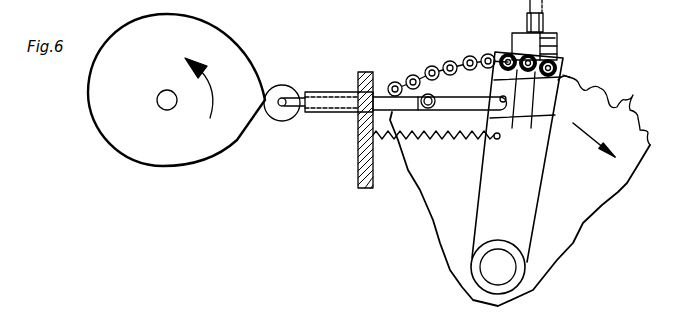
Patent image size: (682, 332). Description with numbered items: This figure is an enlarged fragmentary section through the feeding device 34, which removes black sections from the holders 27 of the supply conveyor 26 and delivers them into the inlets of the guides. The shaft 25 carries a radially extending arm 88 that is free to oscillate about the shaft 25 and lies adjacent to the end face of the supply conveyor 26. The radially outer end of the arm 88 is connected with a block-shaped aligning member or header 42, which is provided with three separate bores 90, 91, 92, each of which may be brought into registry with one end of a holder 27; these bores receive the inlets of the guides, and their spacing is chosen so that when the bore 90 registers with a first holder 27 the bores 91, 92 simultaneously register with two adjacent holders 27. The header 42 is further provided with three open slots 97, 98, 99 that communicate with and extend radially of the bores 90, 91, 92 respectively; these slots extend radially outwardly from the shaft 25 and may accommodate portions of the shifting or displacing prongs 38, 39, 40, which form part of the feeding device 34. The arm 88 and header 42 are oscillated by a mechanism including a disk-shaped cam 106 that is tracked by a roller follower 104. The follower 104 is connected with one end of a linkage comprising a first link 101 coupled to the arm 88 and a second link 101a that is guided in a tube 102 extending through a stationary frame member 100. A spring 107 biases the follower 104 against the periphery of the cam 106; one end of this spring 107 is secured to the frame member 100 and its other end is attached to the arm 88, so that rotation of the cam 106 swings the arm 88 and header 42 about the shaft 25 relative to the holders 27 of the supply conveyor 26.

The disk-shaped cam 106 is at (228, 50).
The roller follower 104 is at (266, 88).
The second link 101a is at (318, 92).
The tube 102 is at (345, 113).
The stationary frame member 100 is at (373, 82).
The first link 101 is at (442, 93).
The spring 107 is at (455, 140).
The open slot 97 is at (505, 50).
The shifting prong 38 is at (507, 43).
The open slot 98 is at (523, 30).
The feeding device 34 is at (553, 30).
The shifting prong 39 is at (557, 41).
The shifting prong 40 is at (557, 52).
The aligning member or header 42 is at (570, 77).
The holder 27 is at (623, 103).
The supply conveyor 26 is at (578, 174).
The arm 88 is at (528, 198).
The open slot 99 is at (525, 97).
The bore 91 is at (518, 106).
The bore 92 is at (538, 108).
The bore 90 is at (505, 112).
The shaft 25 is at (494, 268).